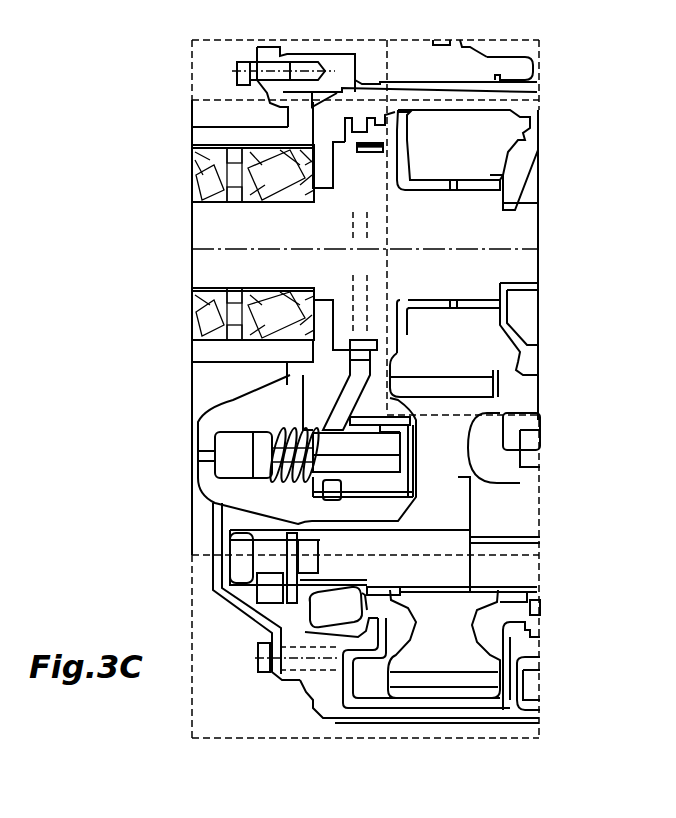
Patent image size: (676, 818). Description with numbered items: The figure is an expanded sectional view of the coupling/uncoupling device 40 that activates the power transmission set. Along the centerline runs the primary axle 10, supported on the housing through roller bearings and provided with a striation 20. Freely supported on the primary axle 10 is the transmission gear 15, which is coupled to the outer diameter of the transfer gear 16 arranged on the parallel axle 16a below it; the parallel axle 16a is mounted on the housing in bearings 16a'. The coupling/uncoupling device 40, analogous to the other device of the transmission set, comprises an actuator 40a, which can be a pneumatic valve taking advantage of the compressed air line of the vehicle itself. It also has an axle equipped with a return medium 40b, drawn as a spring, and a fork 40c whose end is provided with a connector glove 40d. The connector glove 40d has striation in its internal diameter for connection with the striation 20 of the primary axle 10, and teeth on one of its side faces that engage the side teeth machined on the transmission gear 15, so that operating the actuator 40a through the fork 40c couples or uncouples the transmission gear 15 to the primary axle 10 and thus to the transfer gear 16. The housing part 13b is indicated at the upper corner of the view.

The housing part 13b is at (18, 0).
The connector glove 40d is at (365, 130).
The striation 20 is at (365, 148).
The primary axle 10 is at (222, 250).
The fork 40c is at (338, 405).
The return medium 40b is at (272, 433).
The actuator 40a is at (222, 460).
The coupling/uncoupling device 40 is at (185, 507).
The transmission gear 15 is at (487, 145).
The parallel axle 16a is at (423, 566).
The transfer gear 16 is at (467, 658).
The bearings 16a' is at (301, 686).